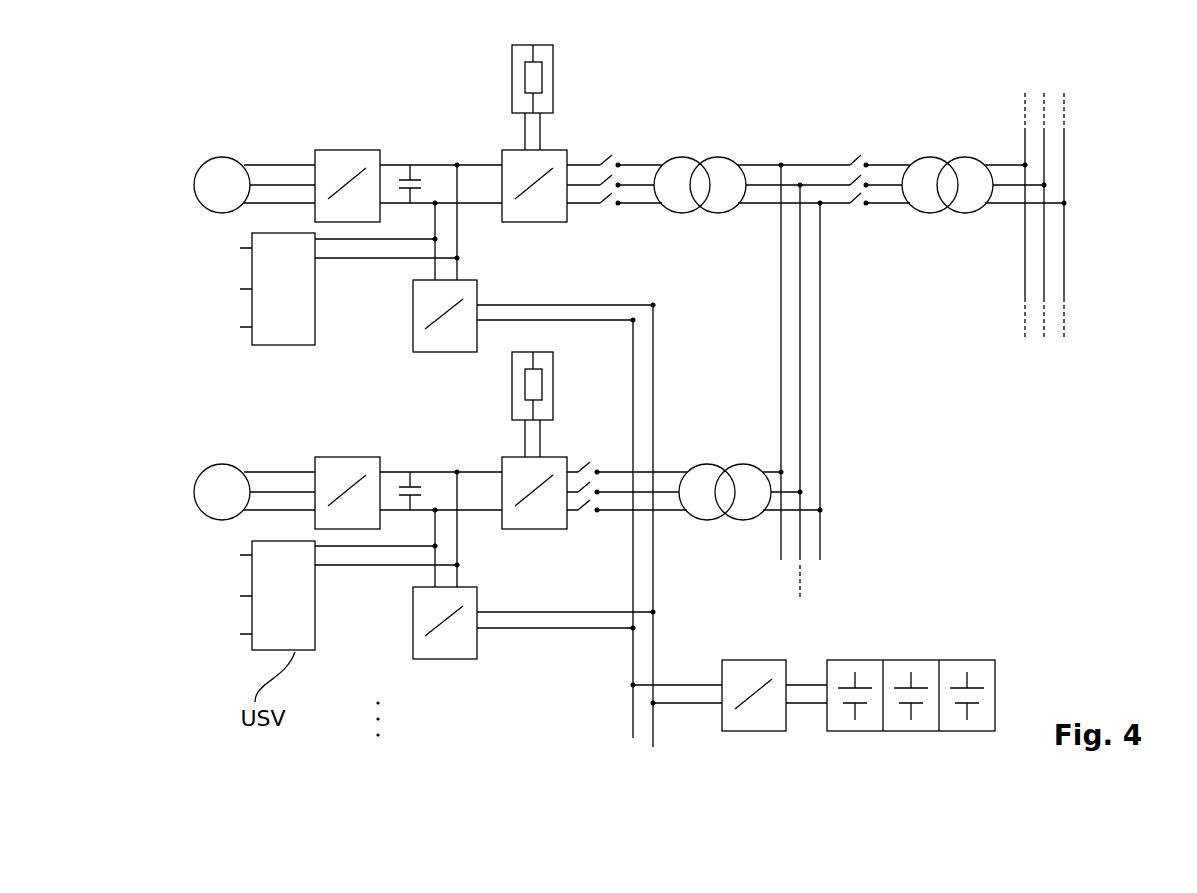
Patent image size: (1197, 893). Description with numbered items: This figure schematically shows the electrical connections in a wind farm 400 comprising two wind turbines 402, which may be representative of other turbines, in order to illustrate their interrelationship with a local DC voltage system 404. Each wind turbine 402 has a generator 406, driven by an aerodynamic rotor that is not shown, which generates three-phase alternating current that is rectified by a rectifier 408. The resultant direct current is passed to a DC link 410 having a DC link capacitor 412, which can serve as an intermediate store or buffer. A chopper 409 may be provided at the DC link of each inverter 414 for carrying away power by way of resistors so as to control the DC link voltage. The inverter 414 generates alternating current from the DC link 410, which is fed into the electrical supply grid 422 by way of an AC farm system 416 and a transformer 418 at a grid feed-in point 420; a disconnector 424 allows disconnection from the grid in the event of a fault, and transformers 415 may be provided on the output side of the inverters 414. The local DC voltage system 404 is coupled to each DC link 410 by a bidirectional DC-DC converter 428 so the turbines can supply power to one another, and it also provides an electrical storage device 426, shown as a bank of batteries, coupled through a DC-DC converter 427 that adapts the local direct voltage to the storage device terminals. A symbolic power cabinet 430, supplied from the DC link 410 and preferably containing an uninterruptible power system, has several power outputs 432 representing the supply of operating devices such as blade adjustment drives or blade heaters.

The wind farm 400 is at (413, 84).
The wind turbine 402 is at (257, 120).
The local DC voltage system 404 is at (640, 572).
The generator 406 is at (222, 157).
The rectifier 408 is at (355, 157).
The chopper 409 is at (553, 52).
The DC link 410 is at (423, 150).
The DC link capacitor 412 is at (405, 163).
The inverter 414 is at (553, 148).
The transformer 415 is at (681, 153).
The AC farm system 416 is at (812, 172).
The transformer 418 is at (945, 213).
The grid feed-in point 420 is at (1090, 162).
The electrical supply grid 422 is at (1090, 299).
The disconnector 424 is at (854, 228).
The electrical storage device 426 is at (908, 630).
The DC-DC converter 427 is at (738, 658).
The DC-DC converter 428 is at (412, 318).
The power cabinet 430 is at (302, 323).
The power outputs 432 is at (242, 327).